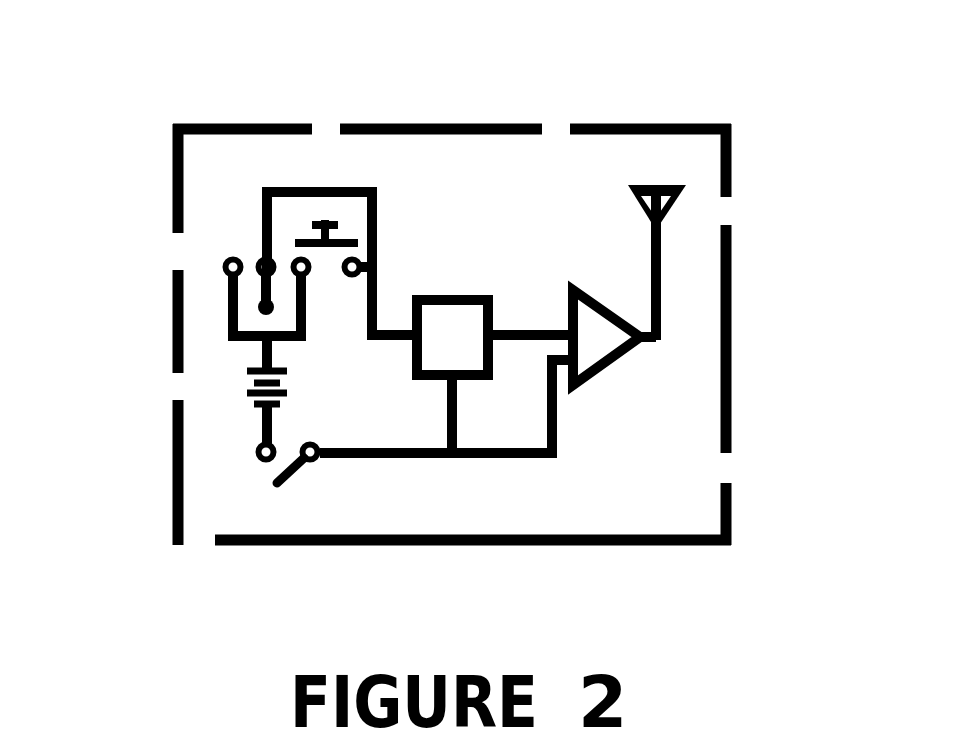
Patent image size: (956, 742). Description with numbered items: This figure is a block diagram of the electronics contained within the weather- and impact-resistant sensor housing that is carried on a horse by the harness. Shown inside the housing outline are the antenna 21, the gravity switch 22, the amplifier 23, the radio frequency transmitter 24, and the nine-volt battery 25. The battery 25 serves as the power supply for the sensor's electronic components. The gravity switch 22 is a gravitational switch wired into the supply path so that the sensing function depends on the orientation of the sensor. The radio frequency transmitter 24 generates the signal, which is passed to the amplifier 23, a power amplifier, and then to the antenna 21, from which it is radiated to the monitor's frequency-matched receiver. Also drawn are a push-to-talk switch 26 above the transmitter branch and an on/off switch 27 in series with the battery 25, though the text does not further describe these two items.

The antenna 21 is at (697, 210).
The gravity switch 22 is at (203, 281).
The amplifier 23 is at (634, 376).
The radio frequency transmitter 24 is at (471, 279).
The 9-volt battery 25 is at (216, 387).
The push-to-talk switch 26 is at (327, 178).
The on/off switch 27 is at (246, 497).